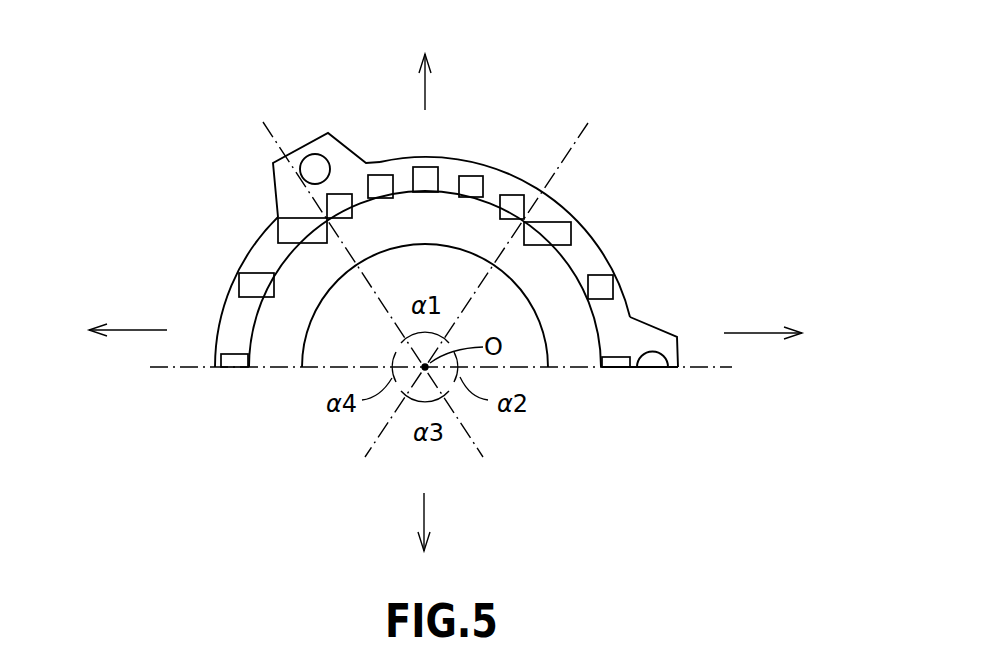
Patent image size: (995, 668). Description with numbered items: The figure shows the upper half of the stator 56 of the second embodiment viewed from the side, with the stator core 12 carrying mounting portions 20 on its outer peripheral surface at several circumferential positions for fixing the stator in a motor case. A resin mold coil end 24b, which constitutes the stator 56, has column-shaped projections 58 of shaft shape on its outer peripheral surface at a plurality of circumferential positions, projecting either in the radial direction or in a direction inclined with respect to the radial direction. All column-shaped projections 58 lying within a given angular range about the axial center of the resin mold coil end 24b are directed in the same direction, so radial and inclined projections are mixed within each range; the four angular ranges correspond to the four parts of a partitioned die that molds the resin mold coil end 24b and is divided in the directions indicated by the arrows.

The stator core 12 is at (568, 205).
The mounting portion 20 is at (316, 154).
The resin mold coil end 24b is at (599, 330).
The stator 56 is at (607, 138).
The column-shaped projection 58 is at (237, 353).